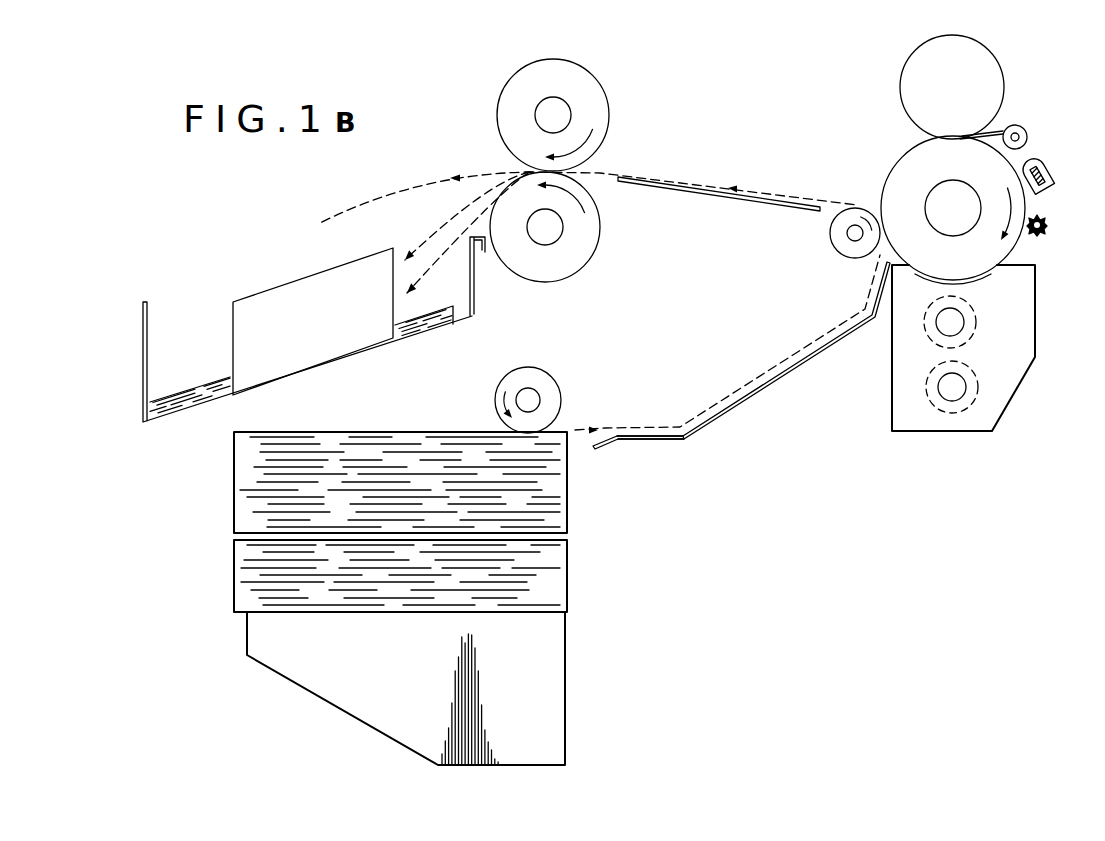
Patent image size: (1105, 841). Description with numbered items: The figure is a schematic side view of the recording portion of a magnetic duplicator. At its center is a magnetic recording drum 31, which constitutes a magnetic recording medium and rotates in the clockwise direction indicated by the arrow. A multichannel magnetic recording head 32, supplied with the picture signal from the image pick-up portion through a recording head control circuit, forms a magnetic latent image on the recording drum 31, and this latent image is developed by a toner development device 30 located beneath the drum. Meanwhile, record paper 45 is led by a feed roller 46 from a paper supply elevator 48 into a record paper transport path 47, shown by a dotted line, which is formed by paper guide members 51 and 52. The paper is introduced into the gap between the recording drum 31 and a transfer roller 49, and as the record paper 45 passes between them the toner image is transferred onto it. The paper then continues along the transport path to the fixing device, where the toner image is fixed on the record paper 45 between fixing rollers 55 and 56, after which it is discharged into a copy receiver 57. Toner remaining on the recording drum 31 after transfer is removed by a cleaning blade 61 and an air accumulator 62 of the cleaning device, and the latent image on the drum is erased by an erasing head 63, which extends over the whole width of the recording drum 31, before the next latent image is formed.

The toner development device 30 is at (1035, 340).
The magnetic recording drum 31 is at (1000, 173).
The multichannel magnetic recording head 32 is at (1047, 228).
The record paper 45 is at (560, 432).
The feed roller 46 is at (540, 372).
The record paper transport path 47 is at (743, 383).
The paper supply elevator 48 is at (557, 698).
The transfer roller 49 is at (833, 252).
The paper guide member 51 is at (708, 420).
The paper guide member 52 is at (705, 197).
The fixing roller 55 is at (610, 98).
The fixing roller 56 is at (594, 252).
The copy receiver 57 is at (474, 300).
The cleaning blade 61 is at (1027, 130).
The air accumulator 62 is at (1003, 80).
The erasing head 63 is at (1053, 175).